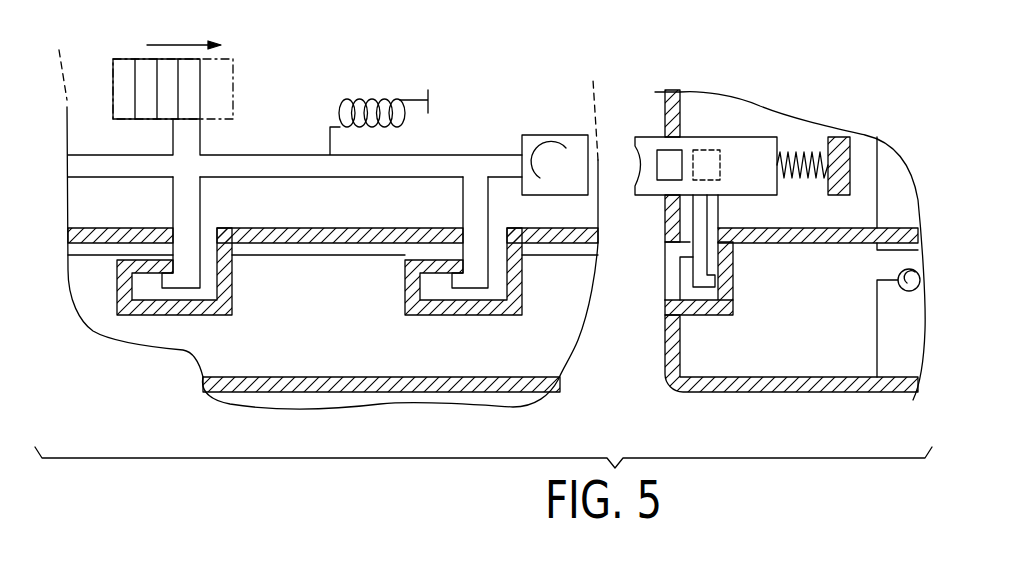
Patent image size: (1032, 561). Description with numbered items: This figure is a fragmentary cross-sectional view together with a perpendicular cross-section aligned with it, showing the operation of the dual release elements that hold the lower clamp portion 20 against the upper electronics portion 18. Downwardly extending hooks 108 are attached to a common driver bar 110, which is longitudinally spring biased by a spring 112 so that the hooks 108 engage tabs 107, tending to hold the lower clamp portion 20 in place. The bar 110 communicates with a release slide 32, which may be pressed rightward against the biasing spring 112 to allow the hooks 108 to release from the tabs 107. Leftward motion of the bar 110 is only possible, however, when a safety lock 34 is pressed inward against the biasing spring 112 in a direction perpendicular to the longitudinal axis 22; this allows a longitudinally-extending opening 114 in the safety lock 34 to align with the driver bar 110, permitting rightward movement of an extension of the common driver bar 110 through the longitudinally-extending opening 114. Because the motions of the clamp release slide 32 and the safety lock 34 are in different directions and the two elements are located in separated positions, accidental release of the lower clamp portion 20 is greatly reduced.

The upper electronics portion 18 is at (472, 98).
The lower clamp portion 20 is at (412, 385).
The longitudinal axis 22 is at (177, 43).
The release slide 32 is at (147, 110).
The safety lock 34 is at (555, 135).
The tabs 107 is at (138, 262).
The downwardly extending hooks 108 is at (182, 278).
The common driver bar 110 is at (242, 163).
The spring 112 is at (382, 102).
The longitudinally-extending opening 114 is at (662, 158).